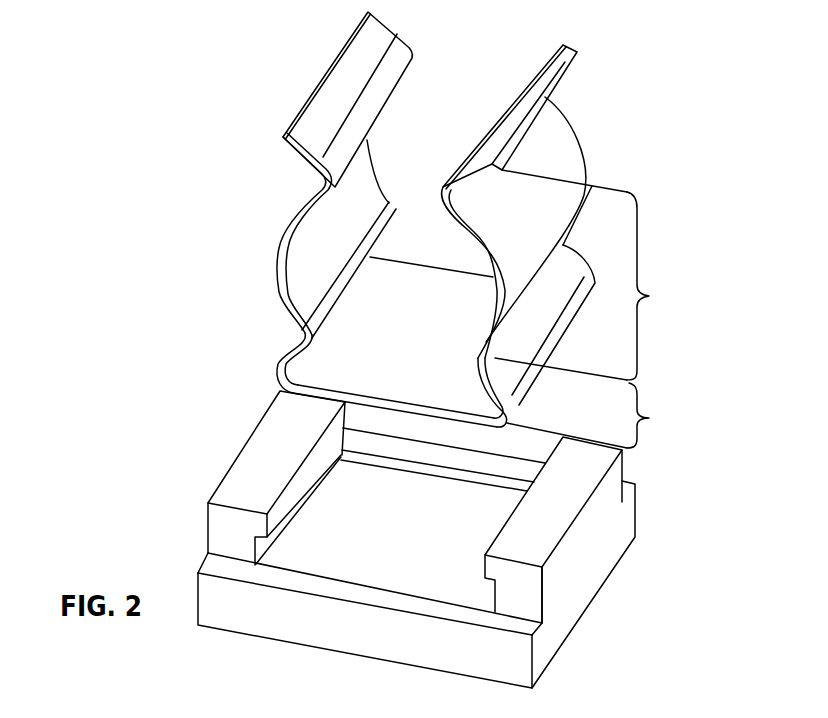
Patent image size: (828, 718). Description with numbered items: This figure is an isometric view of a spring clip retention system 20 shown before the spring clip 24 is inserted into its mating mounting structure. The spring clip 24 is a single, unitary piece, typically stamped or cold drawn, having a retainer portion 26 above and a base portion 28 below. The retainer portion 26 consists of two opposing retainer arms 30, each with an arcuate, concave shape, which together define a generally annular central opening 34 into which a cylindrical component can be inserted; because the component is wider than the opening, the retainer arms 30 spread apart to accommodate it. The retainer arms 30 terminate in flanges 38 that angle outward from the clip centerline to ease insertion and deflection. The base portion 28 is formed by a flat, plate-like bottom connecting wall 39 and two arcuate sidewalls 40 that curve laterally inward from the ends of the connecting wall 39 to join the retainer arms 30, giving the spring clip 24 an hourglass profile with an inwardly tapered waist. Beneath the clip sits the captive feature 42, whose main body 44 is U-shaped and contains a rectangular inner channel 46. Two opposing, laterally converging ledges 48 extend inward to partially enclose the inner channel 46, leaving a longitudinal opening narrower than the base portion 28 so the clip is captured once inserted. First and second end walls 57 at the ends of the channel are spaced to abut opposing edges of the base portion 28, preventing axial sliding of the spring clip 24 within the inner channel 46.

The spring clip retention system 20 is at (205, 62).
The spring clip 24 is at (566, 162).
The retainer portion 26 is at (591, 286).
The base portion 28 is at (597, 415).
The retainer arms 30 is at (276, 258).
The central opening 34 is at (450, 254).
The flanges 38 is at (386, 39).
The bottom connecting wall 39 is at (398, 359).
The sidewalls 40 is at (295, 350).
The captive feature 42 is at (536, 505).
The main body 44 is at (221, 536).
The inner channel 46 is at (423, 534).
The ledges 48 is at (275, 513).
The end walls 57 is at (471, 456).